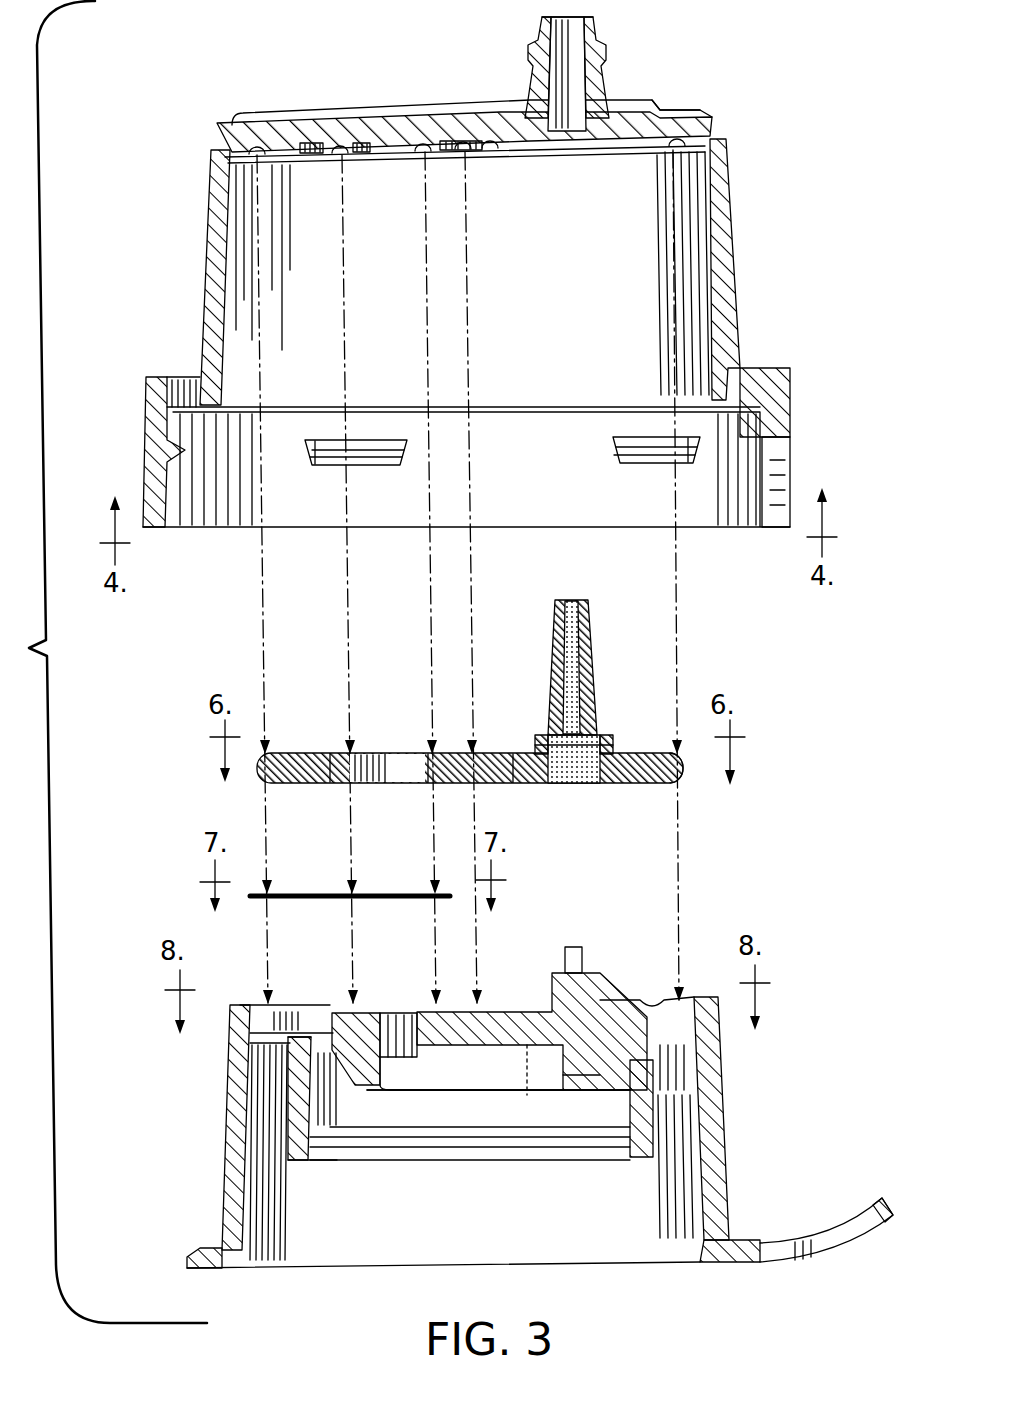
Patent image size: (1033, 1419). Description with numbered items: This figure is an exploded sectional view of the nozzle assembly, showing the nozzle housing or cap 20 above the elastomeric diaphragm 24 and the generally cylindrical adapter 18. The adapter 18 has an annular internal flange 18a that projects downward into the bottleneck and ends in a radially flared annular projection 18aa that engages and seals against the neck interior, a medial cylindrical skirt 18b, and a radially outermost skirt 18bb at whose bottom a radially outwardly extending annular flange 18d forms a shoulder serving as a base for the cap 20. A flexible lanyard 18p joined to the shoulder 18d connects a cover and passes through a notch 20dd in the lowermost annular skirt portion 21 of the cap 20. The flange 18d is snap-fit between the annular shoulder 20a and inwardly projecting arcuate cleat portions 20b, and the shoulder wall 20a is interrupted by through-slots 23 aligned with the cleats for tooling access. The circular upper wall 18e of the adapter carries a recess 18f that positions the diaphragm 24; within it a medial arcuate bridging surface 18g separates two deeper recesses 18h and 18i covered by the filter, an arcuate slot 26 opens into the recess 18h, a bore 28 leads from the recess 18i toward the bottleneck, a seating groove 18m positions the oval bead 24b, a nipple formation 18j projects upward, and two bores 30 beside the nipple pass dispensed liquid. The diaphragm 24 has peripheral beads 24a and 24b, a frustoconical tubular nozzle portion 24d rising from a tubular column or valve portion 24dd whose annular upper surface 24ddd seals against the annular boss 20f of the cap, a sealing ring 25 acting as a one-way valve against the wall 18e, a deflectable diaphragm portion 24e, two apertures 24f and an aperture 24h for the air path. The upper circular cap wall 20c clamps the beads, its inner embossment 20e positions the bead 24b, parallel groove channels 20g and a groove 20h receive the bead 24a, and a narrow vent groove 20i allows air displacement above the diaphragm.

The adapter 18 is at (225, 1148).
The internal flange 18a is at (498, 1106).
The radially flared annular projection 18aa is at (585, 1077).
The medial cylindrical skirt 18b is at (330, 1165).
The radially outermost skirt 18bb is at (715, 1148).
The annular flange 18d is at (218, 1270).
The upper wall 18e is at (705, 1034).
The recess 18f is at (606, 990).
The medial arcuate bridging surface 18g is at (347, 1020).
The recess 18h is at (302, 1020).
The recess 18i is at (395, 1015).
The nipple formation 18j is at (565, 985).
The seating groove 18m is at (668, 1008).
The connecting web or lanyard 18p is at (820, 1250).
The nozzle housing 20 is at (205, 266).
The annular shoulder 20a is at (760, 392).
The arcuate cleat portions 20b is at (160, 446).
The upper circular cap wall 20c is at (408, 135).
The notch 20dd is at (785, 487).
The second radially inner embossment 20e is at (672, 150).
The annular boss 20f is at (600, 80).
The groove channels 20g is at (318, 125).
The groove 20h is at (345, 160).
The vent groove 20i is at (703, 116).
The lowermost annular skirt portion 21 is at (150, 462).
The through-slots 23 is at (190, 392).
The diaphragm 24 is at (288, 772).
The peripheral bead 24a is at (428, 755).
The peripheral bead 24b is at (684, 778).
The tubular nozzle portion 24d is at (598, 655).
The tubular column or valve portion 24dd is at (617, 745).
The annular upper surface 24ddd is at (600, 740).
The diaphragm portion 24e is at (513, 758).
The apertures 24f is at (325, 786).
The diaphragm aperture 24h is at (385, 786).
The sealing ring 25 is at (608, 786).
The arcuate slot 26 is at (290, 1040).
The bore 28 is at (400, 1092).
The bores 30 is at (514, 1084).